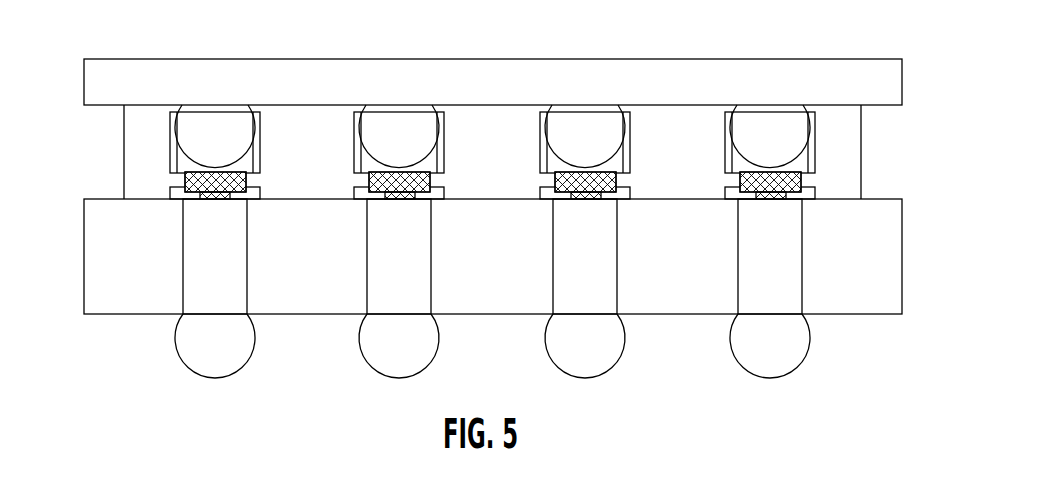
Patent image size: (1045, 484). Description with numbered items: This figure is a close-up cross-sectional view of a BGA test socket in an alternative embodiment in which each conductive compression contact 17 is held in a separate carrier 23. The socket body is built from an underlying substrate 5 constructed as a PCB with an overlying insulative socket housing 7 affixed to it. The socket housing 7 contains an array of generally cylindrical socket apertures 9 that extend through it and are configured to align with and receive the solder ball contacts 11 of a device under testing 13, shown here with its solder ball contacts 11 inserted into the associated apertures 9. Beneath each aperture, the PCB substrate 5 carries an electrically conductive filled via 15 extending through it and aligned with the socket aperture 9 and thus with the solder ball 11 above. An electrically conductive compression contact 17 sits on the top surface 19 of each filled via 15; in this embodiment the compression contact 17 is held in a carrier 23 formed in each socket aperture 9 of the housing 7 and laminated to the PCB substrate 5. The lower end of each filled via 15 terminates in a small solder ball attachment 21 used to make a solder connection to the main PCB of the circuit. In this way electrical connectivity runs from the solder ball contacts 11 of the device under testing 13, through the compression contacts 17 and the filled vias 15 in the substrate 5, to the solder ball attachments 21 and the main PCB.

The substrate 5 is at (97, 317).
The socket housing 7 is at (124, 174).
The socket apertures 9 is at (543, 152).
The solder ball contacts 11 is at (393, 113).
The device under testing 13 is at (808, 88).
The filled vias 15 is at (202, 290).
The compression contact 17 is at (177, 200).
The top surface 19 is at (245, 194).
The solder ball attachment 21 is at (203, 352).
The carrier 23 is at (178, 170).